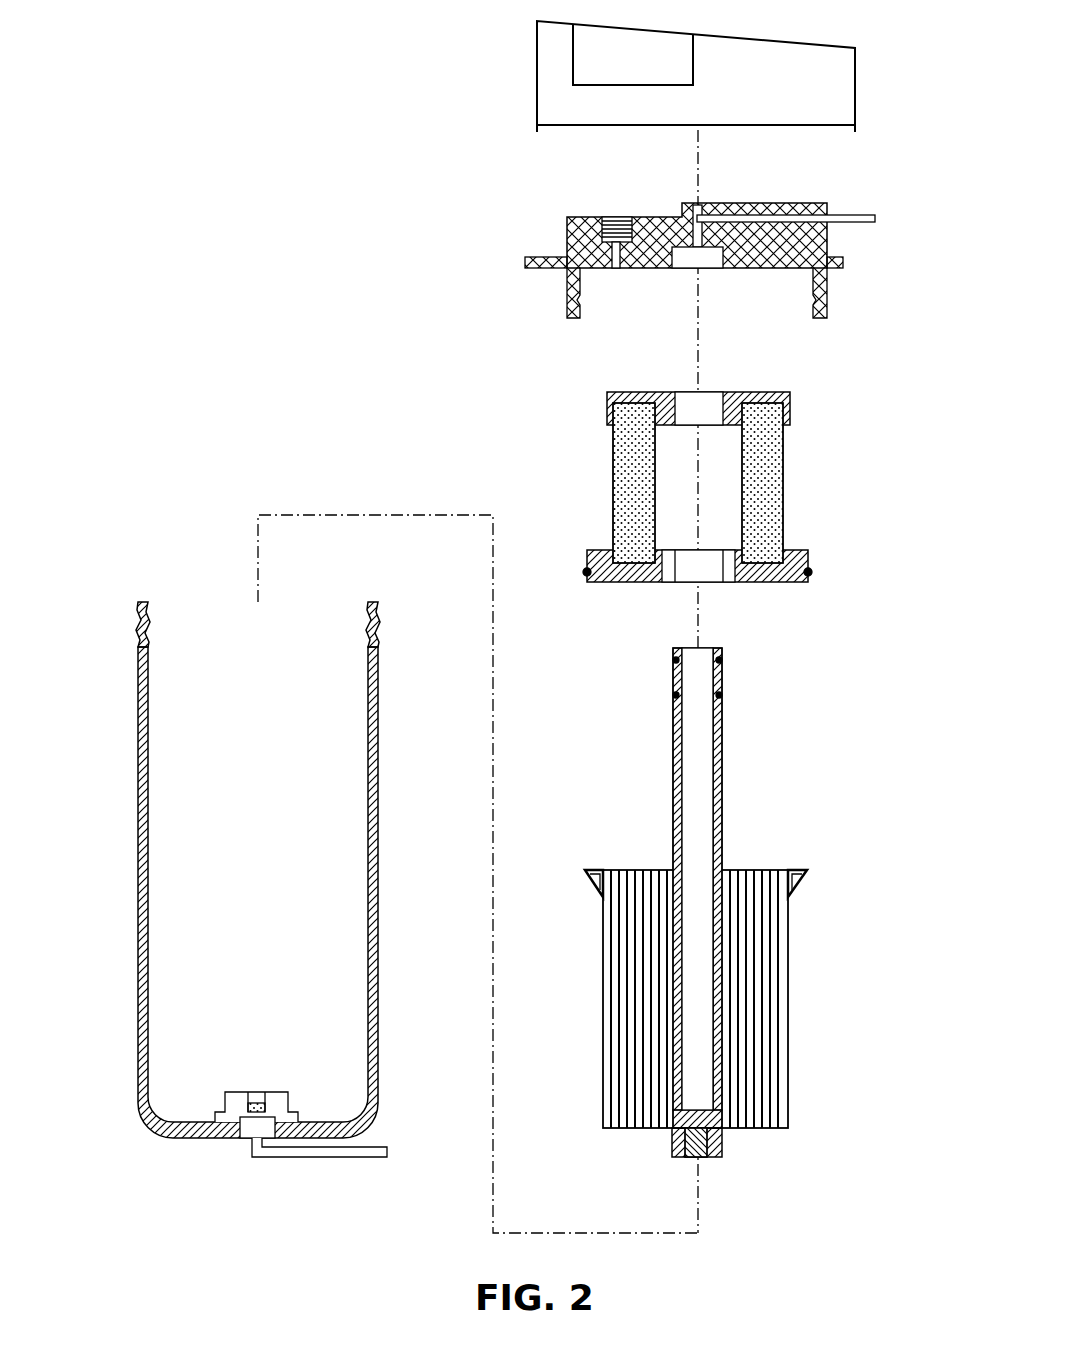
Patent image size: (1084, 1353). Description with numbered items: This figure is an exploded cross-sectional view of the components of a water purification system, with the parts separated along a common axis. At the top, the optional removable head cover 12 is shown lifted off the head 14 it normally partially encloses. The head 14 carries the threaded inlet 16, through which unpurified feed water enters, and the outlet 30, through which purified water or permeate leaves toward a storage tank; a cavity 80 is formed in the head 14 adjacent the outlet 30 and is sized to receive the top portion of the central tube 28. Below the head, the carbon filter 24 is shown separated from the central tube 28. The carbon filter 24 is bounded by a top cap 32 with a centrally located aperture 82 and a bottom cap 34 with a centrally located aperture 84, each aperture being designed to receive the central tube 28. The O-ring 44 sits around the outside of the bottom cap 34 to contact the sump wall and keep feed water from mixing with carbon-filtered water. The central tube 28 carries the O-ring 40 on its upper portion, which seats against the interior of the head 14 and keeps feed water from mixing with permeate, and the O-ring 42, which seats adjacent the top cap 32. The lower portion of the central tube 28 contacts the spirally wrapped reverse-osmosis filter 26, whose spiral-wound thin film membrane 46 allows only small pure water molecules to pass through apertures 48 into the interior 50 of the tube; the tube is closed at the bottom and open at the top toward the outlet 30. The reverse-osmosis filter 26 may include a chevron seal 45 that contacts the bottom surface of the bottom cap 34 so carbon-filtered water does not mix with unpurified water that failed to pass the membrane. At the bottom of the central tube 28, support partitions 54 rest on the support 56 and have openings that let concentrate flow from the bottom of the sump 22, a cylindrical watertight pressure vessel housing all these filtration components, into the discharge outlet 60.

The head cover 12 is at (857, 82).
The head 14 is at (830, 247).
The threaded inlet 16 is at (603, 217).
The sump 22 is at (380, 787).
The carbon filter 24 is at (783, 452).
The reverse-osmosis filter 26 is at (763, 999).
The central tube 28 is at (799, 888).
The outlet 30 is at (850, 212).
The top cap 32 is at (790, 413).
The bottom cap 34 is at (808, 553).
The O-ring 40 is at (673, 658).
The O-ring 42 is at (673, 692).
The O-ring 44 is at (813, 575).
The chevron seal 45 is at (807, 888).
The spiral-wound thin film membrane 46 is at (755, 1012).
The apertures 48 is at (717, 1035).
The interior 50 is at (698, 825).
The support partitions 54 is at (722, 1150).
The support 56 is at (233, 1095).
The discharge outlet 60 is at (267, 1152).
The cavity 80 is at (710, 260).
The aperture 82 is at (698, 410).
The aperture 84 is at (710, 572).